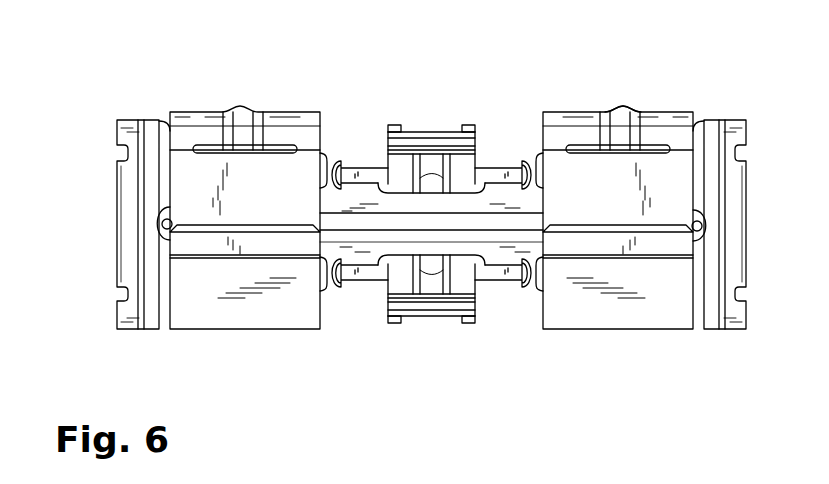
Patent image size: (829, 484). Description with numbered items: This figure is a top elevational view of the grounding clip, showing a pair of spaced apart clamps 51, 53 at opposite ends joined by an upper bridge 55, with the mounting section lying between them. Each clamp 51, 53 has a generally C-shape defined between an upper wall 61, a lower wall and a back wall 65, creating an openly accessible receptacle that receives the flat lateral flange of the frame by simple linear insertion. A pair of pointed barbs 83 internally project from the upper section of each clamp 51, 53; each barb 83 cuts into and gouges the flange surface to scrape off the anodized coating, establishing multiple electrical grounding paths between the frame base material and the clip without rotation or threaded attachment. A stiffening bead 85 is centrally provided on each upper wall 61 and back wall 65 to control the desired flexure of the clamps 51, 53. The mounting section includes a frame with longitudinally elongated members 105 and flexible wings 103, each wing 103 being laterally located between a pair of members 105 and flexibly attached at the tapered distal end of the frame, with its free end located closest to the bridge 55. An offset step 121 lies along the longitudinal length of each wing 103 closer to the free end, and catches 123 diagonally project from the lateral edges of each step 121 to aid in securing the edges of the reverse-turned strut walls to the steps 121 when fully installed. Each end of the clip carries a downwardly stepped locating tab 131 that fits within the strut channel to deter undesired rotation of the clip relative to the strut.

The clamp 51 is at (201, 166).
The upper wall 61 is at (305, 180).
The back wall 65 is at (563, 113).
The stiffening bead 85 is at (621, 108).
The clamp 53 is at (658, 170).
The flexible wing 103 is at (433, 125).
The catch 123 is at (396, 125).
The locating tab 131 is at (117, 210).
The pointed barb 83 is at (165, 238).
The offset step 121 is at (397, 305).
The upper bridge 55 is at (458, 222).
The member 105 is at (524, 282).